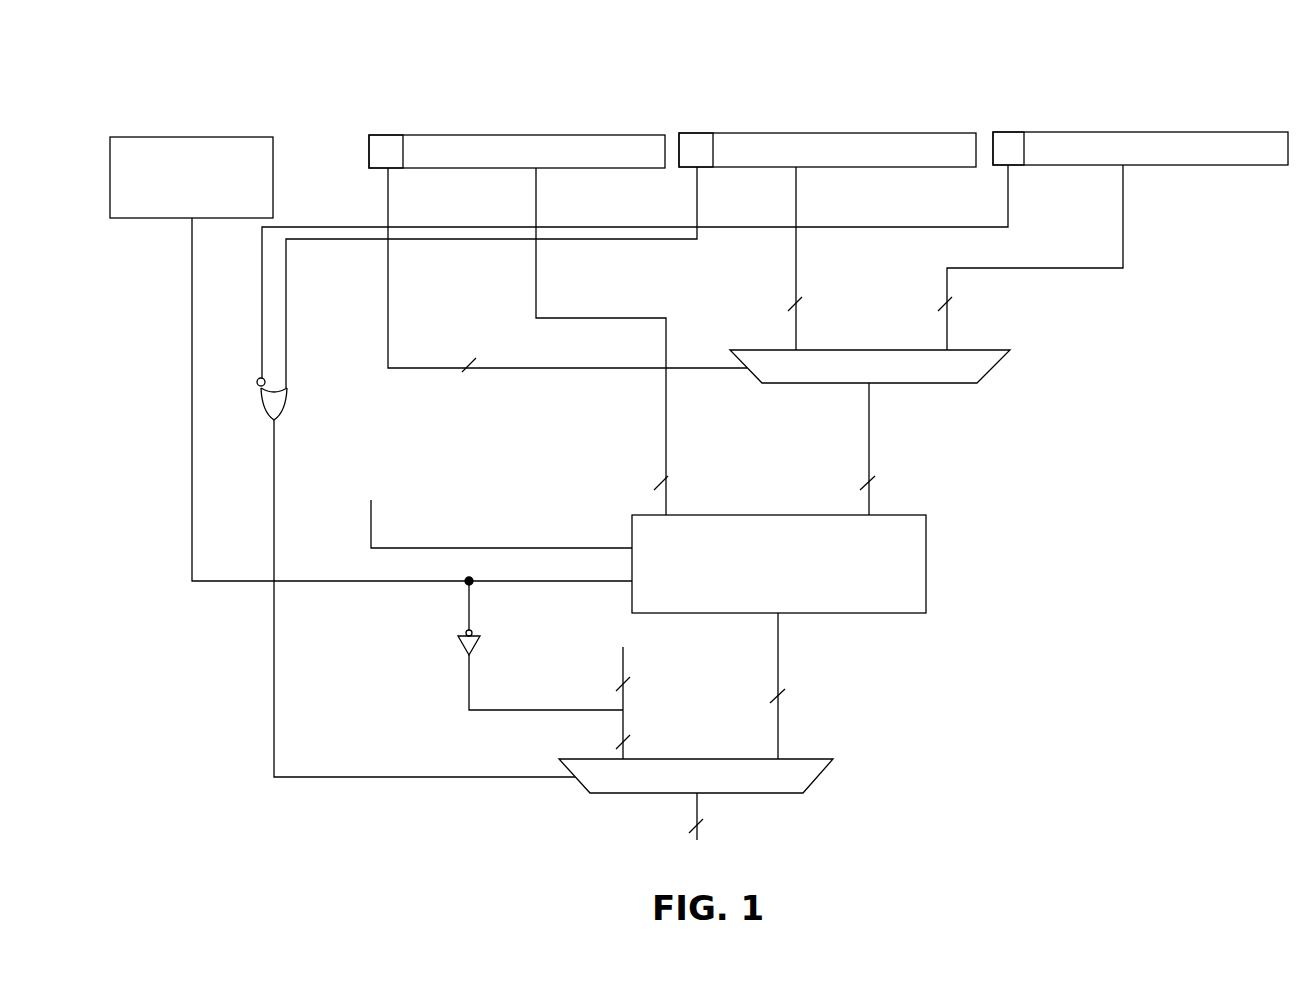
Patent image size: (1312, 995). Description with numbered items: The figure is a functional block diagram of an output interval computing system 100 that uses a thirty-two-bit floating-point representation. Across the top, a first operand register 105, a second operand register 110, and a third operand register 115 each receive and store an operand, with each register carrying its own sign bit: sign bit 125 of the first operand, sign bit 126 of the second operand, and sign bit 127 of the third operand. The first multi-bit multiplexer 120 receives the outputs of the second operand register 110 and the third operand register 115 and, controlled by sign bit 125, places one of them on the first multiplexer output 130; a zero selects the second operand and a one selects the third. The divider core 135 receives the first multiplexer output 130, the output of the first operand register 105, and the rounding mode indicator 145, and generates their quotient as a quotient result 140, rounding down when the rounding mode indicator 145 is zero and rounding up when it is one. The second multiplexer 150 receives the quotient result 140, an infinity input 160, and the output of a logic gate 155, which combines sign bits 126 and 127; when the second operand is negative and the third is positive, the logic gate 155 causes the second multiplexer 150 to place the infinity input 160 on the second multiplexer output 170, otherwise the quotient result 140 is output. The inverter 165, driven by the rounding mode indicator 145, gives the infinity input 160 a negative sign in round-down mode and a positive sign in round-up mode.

The output interval computing system 100 is at (699, 428).
The first operand register 105 is at (617, 134).
The second operand register 110 is at (936, 132).
The third operand register 115 is at (1223, 130).
The first multi-bit multiplexer 120 is at (993, 367).
The sign bit of first operand register 125 is at (390, 134).
The sign bit of second operand register 126 is at (700, 132).
The sign bit of third operand register 127 is at (1003, 131).
The first multiplexer output 130 is at (870, 402).
The divider core 135 is at (926, 597).
The quotient result 140 is at (779, 622).
The rounding mode indicator 145 is at (190, 137).
The second multiplexer 150 is at (822, 773).
The logic gate 155 is at (288, 402).
The infinity input 160 is at (624, 655).
The inverter 165 is at (462, 646).
The second multiplexer output 170 is at (695, 797).